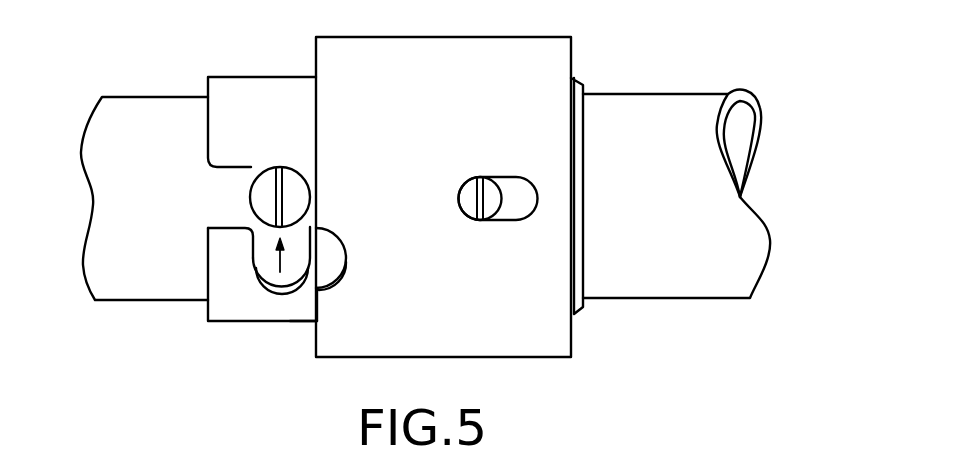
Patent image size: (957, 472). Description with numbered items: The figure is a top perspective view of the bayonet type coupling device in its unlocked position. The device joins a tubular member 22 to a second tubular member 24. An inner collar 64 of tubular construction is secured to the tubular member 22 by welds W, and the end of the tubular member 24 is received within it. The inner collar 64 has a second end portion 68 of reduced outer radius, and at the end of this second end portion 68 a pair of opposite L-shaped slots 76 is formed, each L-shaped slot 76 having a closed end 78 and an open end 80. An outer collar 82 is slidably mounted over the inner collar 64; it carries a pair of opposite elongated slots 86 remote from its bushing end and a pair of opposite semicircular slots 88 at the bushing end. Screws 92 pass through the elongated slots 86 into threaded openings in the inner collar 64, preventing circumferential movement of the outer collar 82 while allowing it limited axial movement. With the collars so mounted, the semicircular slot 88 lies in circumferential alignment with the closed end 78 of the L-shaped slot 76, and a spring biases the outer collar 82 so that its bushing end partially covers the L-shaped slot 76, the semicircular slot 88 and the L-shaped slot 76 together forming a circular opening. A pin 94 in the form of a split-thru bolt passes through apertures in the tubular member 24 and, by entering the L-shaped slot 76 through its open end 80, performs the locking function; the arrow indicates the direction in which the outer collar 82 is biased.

The tubular member 22 is at (667, 93).
The tubular member 24 is at (130, 96).
The inner collar 64 is at (470, 37).
The second end portion 68 is at (247, 76).
The L-shaped slots 76 is at (258, 168).
The closed end 78 is at (277, 290).
The open end 80 is at (210, 240).
The outer collar 82 is at (309, 322).
The elongated slots 86 is at (537, 200).
The semicircular slots 88 is at (347, 262).
The screws 92 is at (482, 220).
The pin 94 is at (268, 228).
The welds W is at (582, 85).